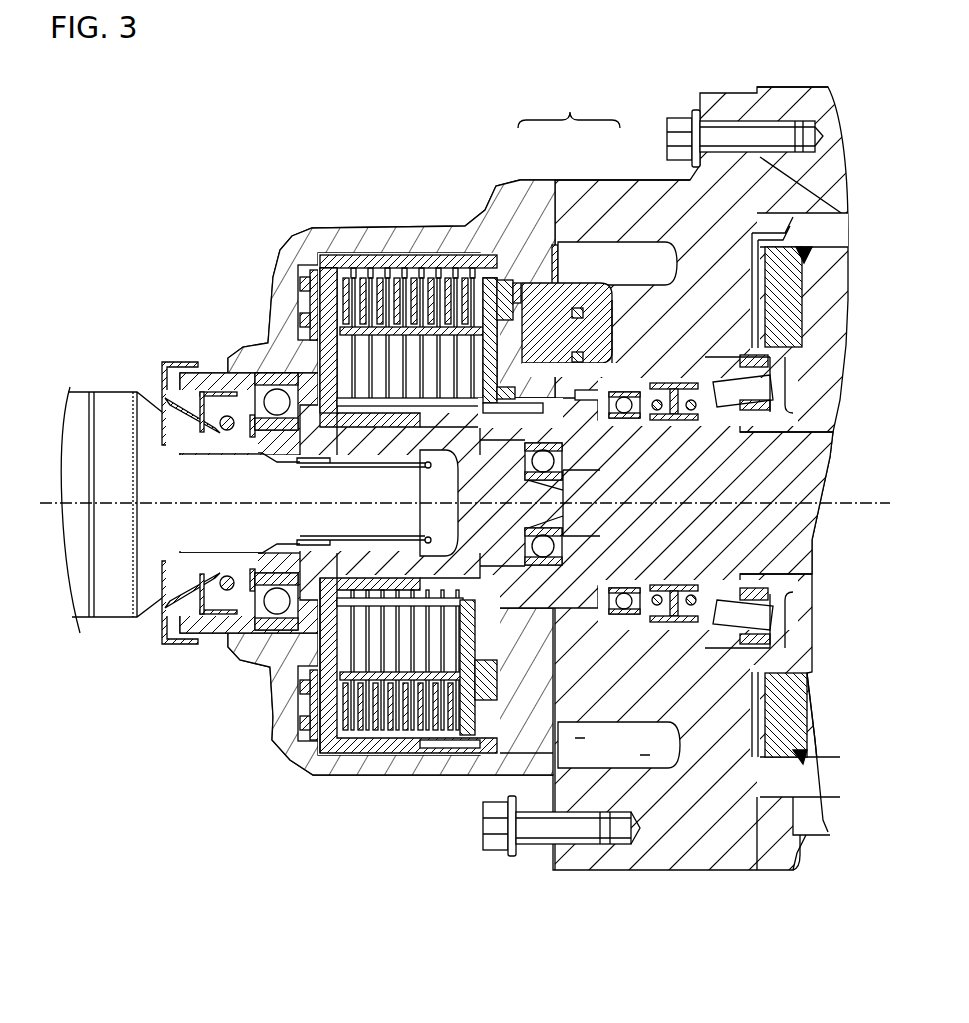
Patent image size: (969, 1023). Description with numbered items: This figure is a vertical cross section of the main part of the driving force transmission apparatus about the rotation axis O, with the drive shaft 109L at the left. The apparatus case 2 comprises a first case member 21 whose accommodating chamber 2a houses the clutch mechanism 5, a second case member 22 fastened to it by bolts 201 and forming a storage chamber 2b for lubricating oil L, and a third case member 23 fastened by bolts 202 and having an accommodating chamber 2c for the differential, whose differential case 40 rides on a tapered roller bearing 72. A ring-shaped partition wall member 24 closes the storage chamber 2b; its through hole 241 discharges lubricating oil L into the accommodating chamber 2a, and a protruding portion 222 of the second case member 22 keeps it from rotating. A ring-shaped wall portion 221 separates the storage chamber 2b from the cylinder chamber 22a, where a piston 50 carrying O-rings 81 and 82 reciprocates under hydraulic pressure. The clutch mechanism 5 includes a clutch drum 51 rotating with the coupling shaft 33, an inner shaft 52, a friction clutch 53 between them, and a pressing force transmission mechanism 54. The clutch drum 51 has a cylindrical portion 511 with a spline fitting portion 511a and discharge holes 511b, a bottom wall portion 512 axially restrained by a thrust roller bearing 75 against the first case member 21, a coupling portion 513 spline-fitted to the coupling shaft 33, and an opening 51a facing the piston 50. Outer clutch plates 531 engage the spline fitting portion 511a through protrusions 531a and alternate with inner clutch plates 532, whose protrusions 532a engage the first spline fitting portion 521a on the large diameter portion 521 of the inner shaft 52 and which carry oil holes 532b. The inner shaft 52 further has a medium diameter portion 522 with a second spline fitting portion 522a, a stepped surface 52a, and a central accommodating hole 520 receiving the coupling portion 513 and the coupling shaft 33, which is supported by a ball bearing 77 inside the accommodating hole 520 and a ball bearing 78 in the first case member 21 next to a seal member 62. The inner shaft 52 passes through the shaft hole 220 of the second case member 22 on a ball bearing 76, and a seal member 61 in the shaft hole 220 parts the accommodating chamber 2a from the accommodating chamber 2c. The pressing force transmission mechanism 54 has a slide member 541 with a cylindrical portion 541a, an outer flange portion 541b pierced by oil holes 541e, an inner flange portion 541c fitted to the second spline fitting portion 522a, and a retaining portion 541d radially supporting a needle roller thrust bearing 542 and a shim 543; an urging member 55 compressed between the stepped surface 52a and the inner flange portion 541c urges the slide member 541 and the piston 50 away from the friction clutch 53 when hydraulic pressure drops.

The apparatus case 2 is at (797, 76).
The accommodating chamber 2a is at (307, 673).
The storage chamber 2b is at (667, 747).
The accommodating chamber 2c is at (822, 237).
The clutch mechanism 5 is at (315, 755).
The first case member 21 is at (538, 878).
The second case member 22 is at (633, 873).
The cylinder chamber 22a is at (614, 357).
The third case member 23 is at (770, 873).
The partition wall member 24 is at (558, 266).
The coupling shaft 33 is at (200, 567).
The differential case 40 is at (793, 827).
The piston 50 is at (590, 336).
The clutch drum 51 is at (322, 735).
The opening 51a is at (478, 740).
The inner shaft 52 is at (810, 480).
The stepped surface 52a is at (522, 548).
The friction clutch 53 is at (402, 747).
The pressing force transmission mechanism 54 is at (551, 246).
The urging member 55 is at (536, 550).
The seal member 61 is at (690, 424).
The seal member 62 is at (233, 434).
The tapered roller bearing 72 is at (738, 396).
The thrust roller bearing 75 is at (300, 305).
The ball bearing 76 is at (622, 600).
The ball bearing 77 is at (560, 461).
The ball bearing 78 is at (277, 607).
The O-ring 81 is at (578, 395).
The O-ring 82 is at (585, 317).
The drive shaft 109L is at (80, 392).
The bolt 201 is at (498, 840).
The bolt 202 is at (675, 128).
The shaft hole 220 is at (652, 590).
The ring-shaped wall portion 221 is at (590, 710).
The protruding portion 222 is at (600, 188).
The through hole 241 is at (553, 753).
The cylindrical portion 511 is at (445, 262).
The spline fitting portion 511a is at (393, 280).
The discharge holes 511b is at (405, 262).
The bottom wall portion 512 is at (306, 244).
The coupling portion 513 is at (305, 466).
The accommodating hole 520 is at (360, 360).
The large diameter portion 521 is at (362, 600).
The first spline fitting portion 521a is at (403, 402).
The medium diameter portion 522 is at (712, 510).
The second spline fitting portion 522a is at (690, 418).
The outer clutch plates 531 is at (347, 740).
The protrusions 531a is at (368, 747).
The inner clutch plates 532 is at (332, 275).
The protrusions 532a is at (377, 405).
The oil holes 532b is at (318, 325).
The slide member 541 is at (490, 285).
The cylindrical portion 541a is at (526, 410).
The outer flange portion 541b is at (503, 300).
The inner flange portion 541c is at (610, 413).
The retaining portion 541d is at (490, 343).
The oil holes 541e is at (470, 665).
The needle roller thrust bearing 542 is at (512, 300).
The shim 543 is at (505, 288).
The rotation axis O is at (65, 504).
The lubricating oil L is at (623, 759).